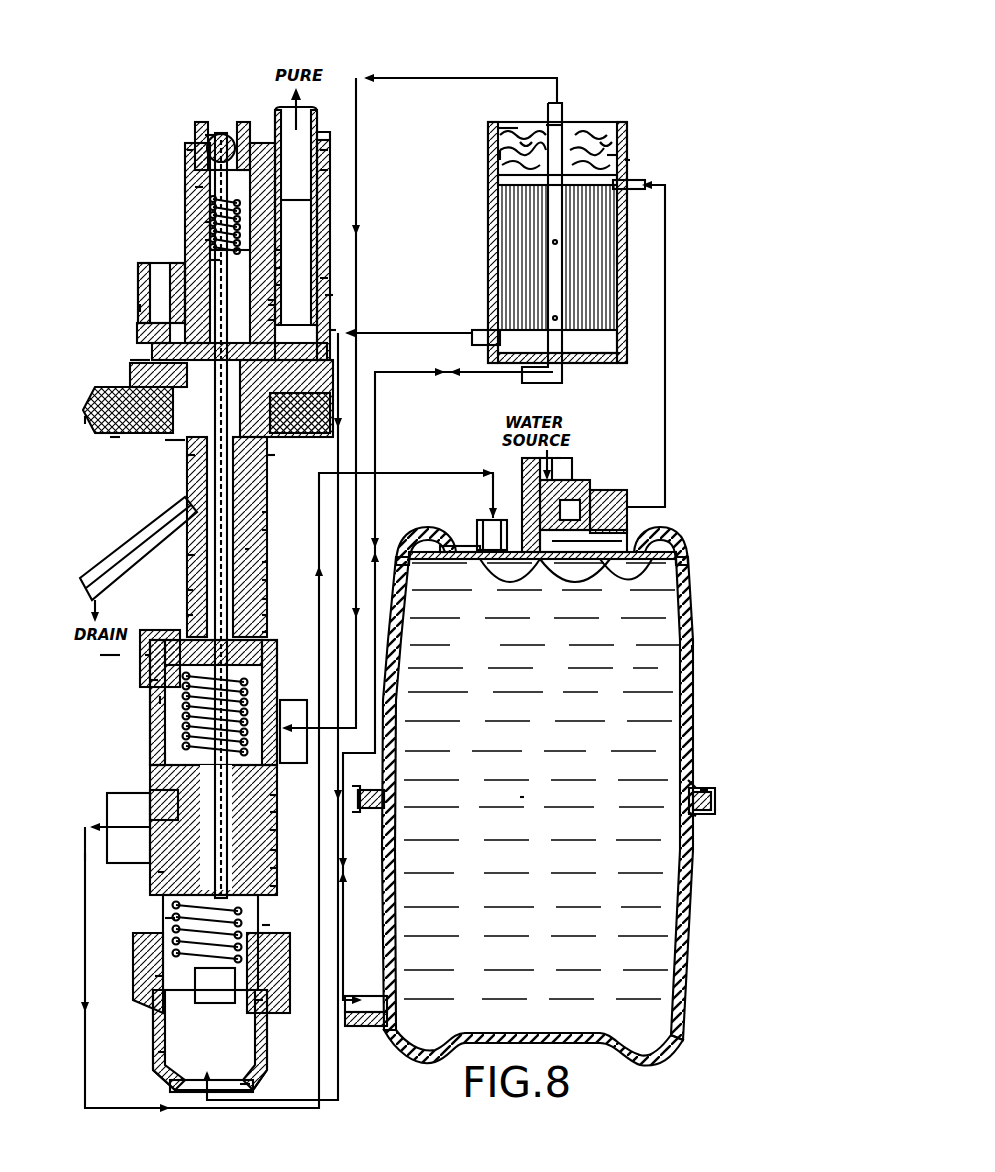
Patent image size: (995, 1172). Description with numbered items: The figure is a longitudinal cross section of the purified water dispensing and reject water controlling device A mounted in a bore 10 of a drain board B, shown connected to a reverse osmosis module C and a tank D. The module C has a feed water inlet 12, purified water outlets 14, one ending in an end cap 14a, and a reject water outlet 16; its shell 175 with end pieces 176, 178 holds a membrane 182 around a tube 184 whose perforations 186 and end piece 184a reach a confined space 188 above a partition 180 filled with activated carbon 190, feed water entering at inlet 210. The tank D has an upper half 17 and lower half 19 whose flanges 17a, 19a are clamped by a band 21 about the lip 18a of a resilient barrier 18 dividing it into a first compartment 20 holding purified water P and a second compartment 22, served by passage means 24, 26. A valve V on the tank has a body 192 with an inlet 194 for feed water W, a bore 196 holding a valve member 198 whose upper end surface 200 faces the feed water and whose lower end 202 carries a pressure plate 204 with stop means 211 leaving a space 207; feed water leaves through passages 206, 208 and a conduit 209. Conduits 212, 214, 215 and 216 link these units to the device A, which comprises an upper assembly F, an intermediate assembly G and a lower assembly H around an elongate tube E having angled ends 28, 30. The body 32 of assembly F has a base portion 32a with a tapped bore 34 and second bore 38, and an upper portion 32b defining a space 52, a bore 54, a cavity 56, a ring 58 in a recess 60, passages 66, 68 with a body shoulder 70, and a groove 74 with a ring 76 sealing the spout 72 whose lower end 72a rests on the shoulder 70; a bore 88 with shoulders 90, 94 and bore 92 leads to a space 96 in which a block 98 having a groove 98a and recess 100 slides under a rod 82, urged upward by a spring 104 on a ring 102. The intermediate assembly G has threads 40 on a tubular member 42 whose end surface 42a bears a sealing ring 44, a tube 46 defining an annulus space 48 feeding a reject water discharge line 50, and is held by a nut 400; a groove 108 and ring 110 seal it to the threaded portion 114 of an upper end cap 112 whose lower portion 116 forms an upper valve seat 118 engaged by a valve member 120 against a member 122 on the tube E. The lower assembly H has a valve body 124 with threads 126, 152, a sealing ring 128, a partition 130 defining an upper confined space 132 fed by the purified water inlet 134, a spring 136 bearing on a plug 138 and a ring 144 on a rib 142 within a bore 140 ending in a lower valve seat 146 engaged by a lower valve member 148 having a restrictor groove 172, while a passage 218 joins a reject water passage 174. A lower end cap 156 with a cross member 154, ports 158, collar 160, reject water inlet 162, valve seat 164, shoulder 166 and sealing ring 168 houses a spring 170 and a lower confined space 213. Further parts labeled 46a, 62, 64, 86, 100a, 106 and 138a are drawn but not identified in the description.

The transverse vertical bore 10 is at (165, 440).
The pressurized feed water inlet 12 is at (645, 182).
The purified water outlet 14 is at (548, 112).
The end cap 14a is at (546, 125).
The reject water outlet 16 is at (480, 330).
The upper cup shaped half 17 is at (694, 700).
The flange 17a is at (700, 780).
The cup shaped resilient transverse barrier 18 is at (640, 565).
The circular lip 18a is at (720, 777).
The lower cup shaped half 19 is at (690, 915).
The flange 19a is at (705, 815).
The first compartment 20 is at (587, 809).
The channeled shape band 21 is at (715, 800).
The second compartment 22 is at (422, 540).
The first passage means 24 is at (388, 1016).
The second passage means 26 is at (480, 528).
The upper angled end 28 is at (185, 165).
The lower angled end 30 is at (272, 905).
The body 32 is at (130, 360).
The base portion 32a is at (90, 410).
The upper portion 32b is at (333, 295).
The tapped centered lower first bore 34 is at (150, 437).
The second bore 38 is at (270, 462).
The external threads 40 is at (120, 433).
The tubular member 42 is at (268, 496).
The upper circular end surface 42a is at (130, 385).
The sealing ring 44 is at (132, 372).
The tube 46 is at (268, 530).
The passage 46a is at (187, 560).
The annulus shaped space 48 is at (268, 478).
The reject water discharge line 50 is at (150, 530).
The confined space 52 is at (335, 330).
The bore 54 is at (140, 333).
The cavity 56 is at (138, 275).
The resilient ring 58 is at (276, 320).
The recess 60 is at (152, 350).
The seal 62 is at (190, 455).
The passage 64 is at (272, 305).
The transverse passage 66 is at (288, 300).
The upper passage 68 is at (336, 165).
The body shoulder 70 is at (336, 260).
The purified water dispensing spout 72 is at (330, 110).
The lower end of spout 72a is at (299, 188).
The groove 74 is at (326, 150).
The resilient ring 76 is at (322, 134).
The elongate rigid rod 82 is at (228, 138).
The piston 86 is at (176, 295).
The bore 88 is at (290, 286).
The first body shoulder 90 is at (281, 268).
The bore of larger diameter 92 is at (281, 250).
The second body shoulder 94 is at (205, 240).
The vertical space 96 is at (208, 205).
The rigid block 98 is at (200, 130).
The groove 98a is at (218, 133).
The recess 100 is at (195, 187).
The bore 100a is at (187, 150).
The resilient ring 102 is at (210, 260).
The compressed helical spring 104 is at (205, 222).
The passage 106 is at (268, 562).
The circumferentially extending groove 108 is at (268, 580).
The resilient ring 110 is at (268, 599).
The upper end cap 112 is at (150, 640).
The upper interior threaded portion 114 is at (187, 590).
The lower portion 116 is at (150, 655).
The upper valve seat 118 is at (268, 632).
The upper resilient valve member 120 is at (187, 615).
The member secured to tube 122 is at (268, 615).
The elongate valve body 124 is at (150, 740).
The upper threads 126 is at (150, 680).
The resilient sealing ring 128 is at (100, 660).
The transverse partition 130 is at (276, 850).
The upper confined space 132 is at (165, 755).
The purified water inlet 134 is at (278, 770).
The compressed helical spring 136 is at (183, 712).
The rigid plug 138 is at (276, 795).
The passage 138a is at (276, 812).
The bore 140 is at (276, 868).
The rib 142 is at (276, 830).
The resilient ring 144 is at (170, 790).
The lower valve seat 146 is at (276, 886).
The lower valve member 148 is at (160, 895).
The threads 152 is at (270, 925).
The cross member 154 is at (221, 996).
The lower end cap 156 is at (160, 1055).
The ports 158 is at (262, 1005).
The longitudinally extending collar 160 is at (158, 1010).
The reject water inlet passage 162 is at (248, 1086).
The valve seat 164 is at (172, 1080).
The circular body shoulder 166 is at (160, 980).
The sealing ring 168 is at (140, 960).
The compressed helical spring 170 is at (172, 940).
The groove 172 is at (160, 875).
The reject water passage 174 is at (90, 858).
The cylindrical shell 175 is at (645, 250).
The upper end piece 176 is at (600, 122).
The lower end piece 178 is at (615, 365).
The partition 180 is at (620, 160).
The reverse osmosis membrane 182 is at (600, 280).
The tube 184 is at (570, 338).
The end piece 184a is at (500, 155).
The perforations 186 is at (560, 125).
The confined space 188 is at (500, 170).
The activated carbon 190 is at (498, 135).
The valve body 192 is at (522, 490).
The inlet 194 is at (575, 470).
The vertically extending bore 196 is at (520, 565).
The elongate valve member 198 is at (580, 528).
The upper end surface 200 is at (572, 490).
The lower end 202 is at (600, 572).
The pressure plate 204 is at (622, 592).
The feed water discharge passage 206 is at (600, 495).
The space 207 is at (680, 550).
The transverse feed water discharge passage 208 is at (627, 507).
The conduit 209 is at (668, 246).
The feed water inlet 210 is at (625, 192).
The stop means 211 is at (456, 560).
The conduit 212 is at (376, 410).
The lower confined space 213 is at (170, 920).
The conduit 214 is at (357, 212).
The conduit 215 is at (442, 333).
The conduit 216 is at (87, 1033).
The transverse passage 218 is at (150, 835).
The nut 400 is at (112, 440).
The purified water dispensing device and reject water controlling device A is at (175, 190).
The drain board B is at (85, 420).
The reverse osmosis module C is at (630, 160).
The tank D is at (698, 648).
The elongate rigid tube E is at (248, 549).
The upper assembly F is at (140, 308).
The intermediate assembly G is at (268, 512).
The lower assembly H is at (160, 700).
The purified water P is at (504, 809).
The valve V is at (482, 478).
The pressurized feed water W is at (560, 460).